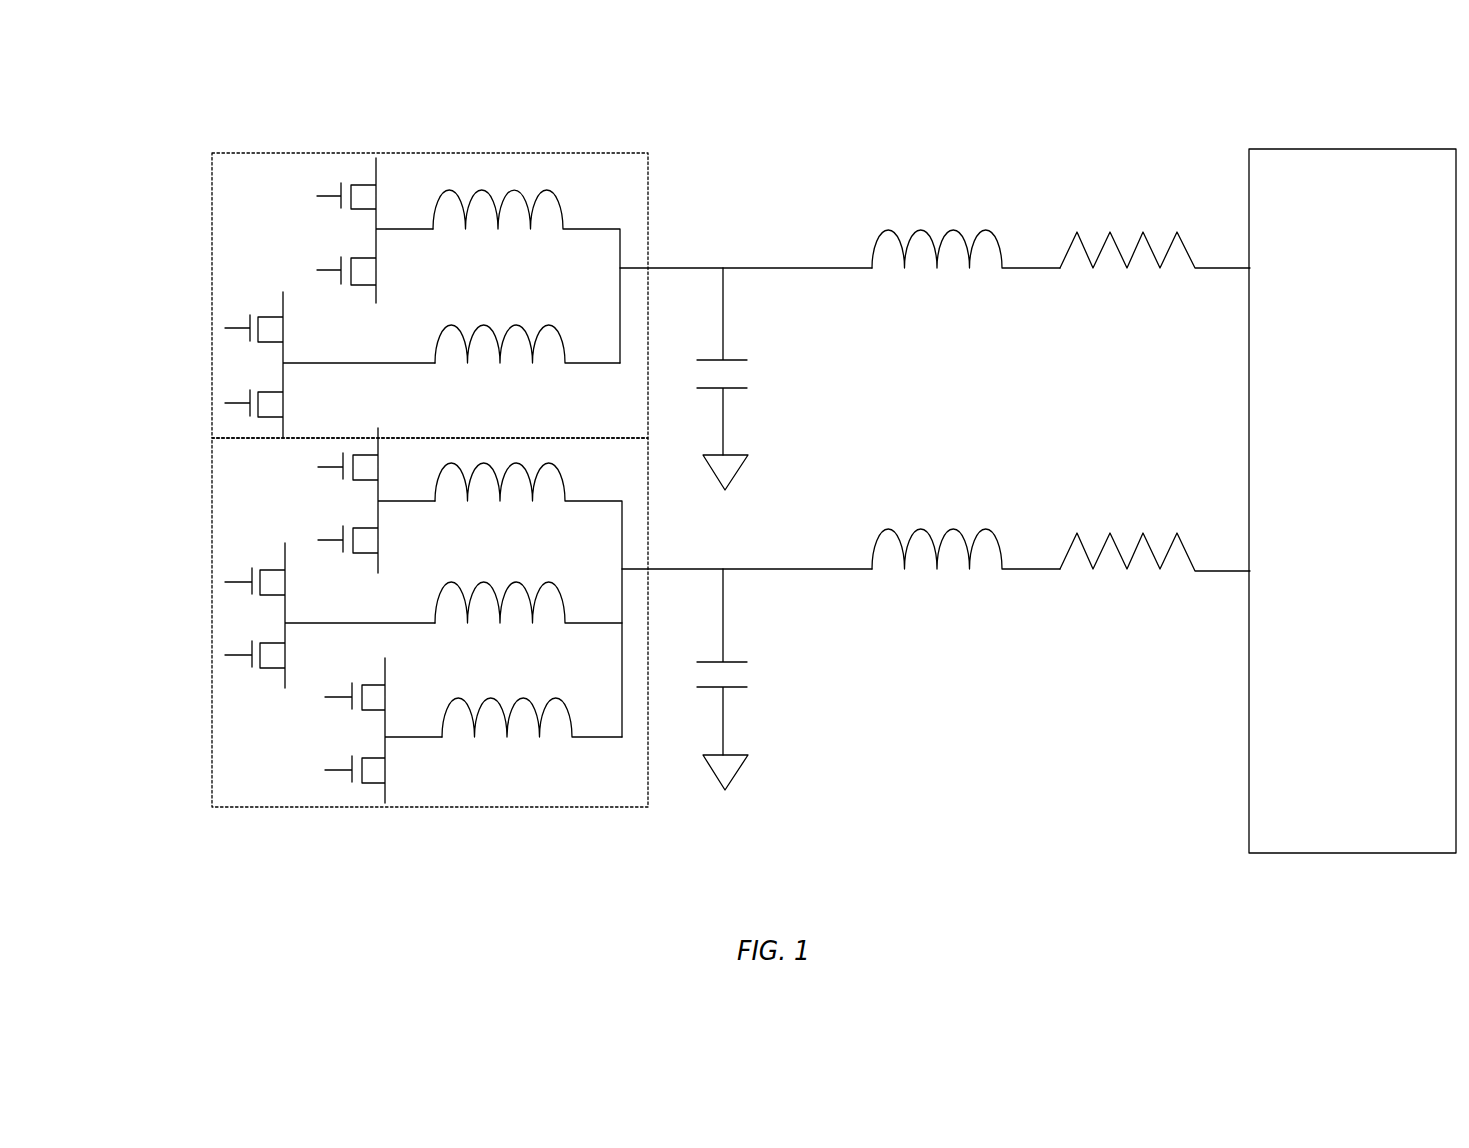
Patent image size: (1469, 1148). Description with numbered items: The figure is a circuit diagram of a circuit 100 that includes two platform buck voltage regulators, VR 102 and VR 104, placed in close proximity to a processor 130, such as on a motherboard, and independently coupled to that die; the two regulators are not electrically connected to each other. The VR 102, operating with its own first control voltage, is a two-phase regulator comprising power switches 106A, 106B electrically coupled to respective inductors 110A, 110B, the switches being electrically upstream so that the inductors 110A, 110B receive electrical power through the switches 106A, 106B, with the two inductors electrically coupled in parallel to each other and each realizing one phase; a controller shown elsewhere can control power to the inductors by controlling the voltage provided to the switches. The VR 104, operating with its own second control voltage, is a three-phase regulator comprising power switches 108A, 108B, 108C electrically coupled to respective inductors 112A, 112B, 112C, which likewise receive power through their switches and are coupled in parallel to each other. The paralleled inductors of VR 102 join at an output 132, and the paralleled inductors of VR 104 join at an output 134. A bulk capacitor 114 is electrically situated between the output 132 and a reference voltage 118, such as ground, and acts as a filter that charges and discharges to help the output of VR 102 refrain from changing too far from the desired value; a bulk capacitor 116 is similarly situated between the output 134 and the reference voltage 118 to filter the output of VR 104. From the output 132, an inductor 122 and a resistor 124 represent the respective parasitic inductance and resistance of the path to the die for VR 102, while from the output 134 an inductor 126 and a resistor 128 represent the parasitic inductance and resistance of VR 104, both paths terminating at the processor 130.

The circuit 100 is at (226, 85).
The VR 102 is at (211, 190).
The VR 104 is at (211, 490).
The power switch 106A is at (300, 206).
The power switch 106B is at (195, 345).
The power switch 108A is at (303, 482).
The power switch 108B is at (195, 603).
The power switch 108C is at (308, 721).
The inductor 110A is at (515, 196).
The inductor 110B is at (515, 333).
The inductor 112A is at (530, 476).
The inductor 112B is at (520, 585).
The inductor 112C is at (525, 703).
The bulk capacitor 114 is at (745, 360).
The bulk capacitor 116 is at (745, 662).
The reference voltage 118 is at (740, 468).
The inductor 122 is at (920, 232).
The resistor 124 is at (1112, 240).
The inductor 126 is at (957, 533).
The resistor 128 is at (1110, 540).
The processor 130 is at (1348, 150).
The output 132 is at (805, 267).
The output 134 is at (790, 568).